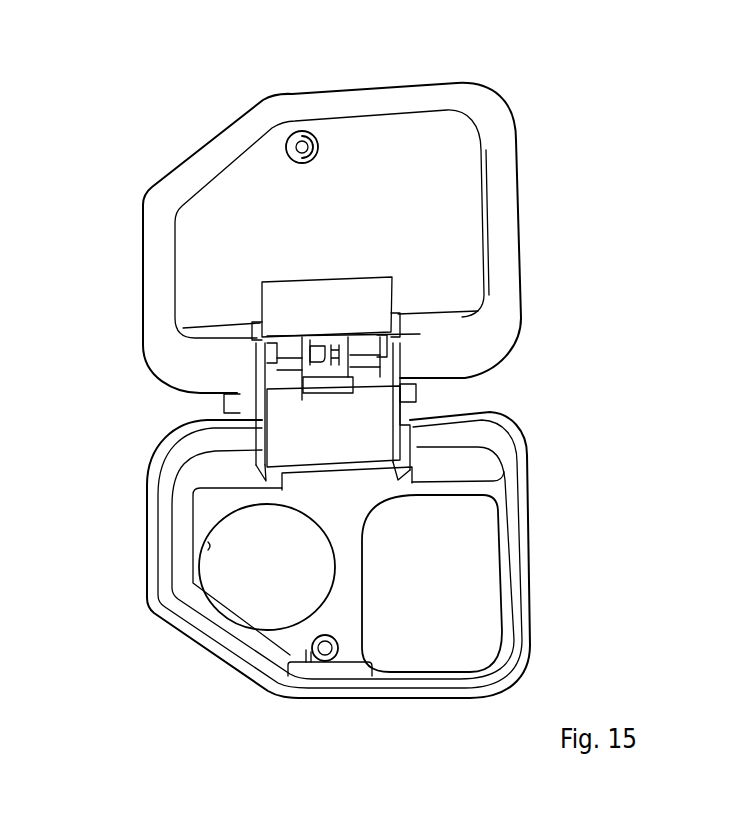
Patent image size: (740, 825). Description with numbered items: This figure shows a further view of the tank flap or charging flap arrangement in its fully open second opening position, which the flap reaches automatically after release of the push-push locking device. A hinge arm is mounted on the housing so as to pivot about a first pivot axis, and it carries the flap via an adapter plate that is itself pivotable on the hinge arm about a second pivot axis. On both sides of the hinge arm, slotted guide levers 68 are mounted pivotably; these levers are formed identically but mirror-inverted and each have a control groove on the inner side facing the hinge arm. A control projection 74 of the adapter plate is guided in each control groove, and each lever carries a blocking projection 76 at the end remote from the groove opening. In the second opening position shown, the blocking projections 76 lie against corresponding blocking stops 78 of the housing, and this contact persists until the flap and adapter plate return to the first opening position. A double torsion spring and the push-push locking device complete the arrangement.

The slotted guide levers 68 is at (254, 400).
The control projection 74 is at (262, 340).
The blocking projection 76 is at (410, 426).
The blocking stops 78 is at (262, 448).